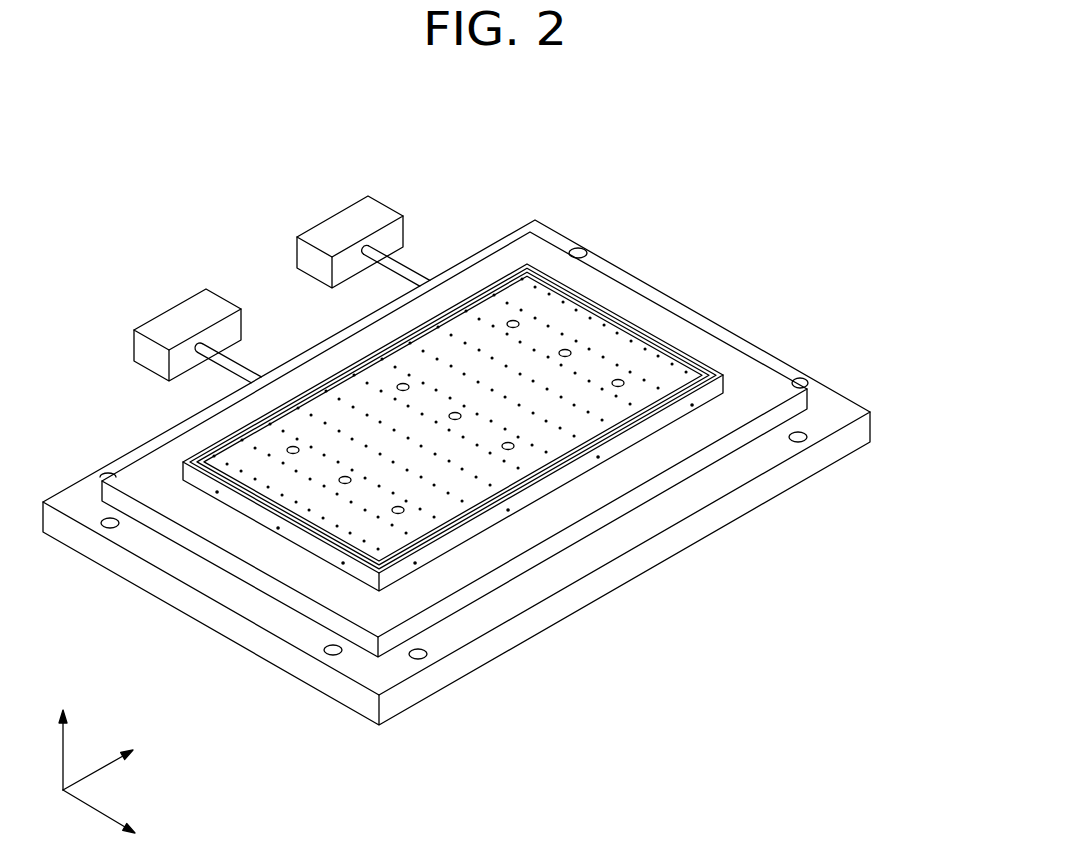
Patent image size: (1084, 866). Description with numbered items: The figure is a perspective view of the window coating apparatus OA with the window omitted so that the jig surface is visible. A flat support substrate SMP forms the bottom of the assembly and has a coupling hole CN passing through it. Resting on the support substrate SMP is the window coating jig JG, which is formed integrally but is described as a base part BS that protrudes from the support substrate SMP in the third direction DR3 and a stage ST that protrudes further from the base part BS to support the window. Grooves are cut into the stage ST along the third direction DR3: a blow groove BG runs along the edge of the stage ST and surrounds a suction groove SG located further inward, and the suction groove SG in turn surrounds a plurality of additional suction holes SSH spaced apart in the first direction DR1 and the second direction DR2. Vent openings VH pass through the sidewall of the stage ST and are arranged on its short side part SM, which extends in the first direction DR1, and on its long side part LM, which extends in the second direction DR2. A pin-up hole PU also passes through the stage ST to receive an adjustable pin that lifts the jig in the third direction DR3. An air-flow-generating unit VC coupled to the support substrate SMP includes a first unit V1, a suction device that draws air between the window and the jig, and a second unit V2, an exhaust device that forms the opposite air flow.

The window coating apparatus OA is at (726, 211).
The support substrate SMP is at (513, 636).
The coupling hole CN is at (419, 652).
The window coating jig JG is at (912, 348).
The base part BS is at (808, 410).
The stage ST is at (724, 391).
The short side part SM is at (310, 542).
The vent opening VH is at (508, 510).
The blow groove BG is at (573, 463).
The suction groove SG is at (622, 436).
The long side part LM is at (704, 396).
The additional suction holes SSH is at (283, 492).
The pin-up hole PU is at (512, 321).
The air-flow-generating unit VC is at (293, 141).
The first unit V1 is at (338, 227).
The second unit V2 is at (183, 316).
The first direction DR1 is at (121, 823).
The second direction DR2 is at (119, 760).
The third direction DR3 is at (64, 735).